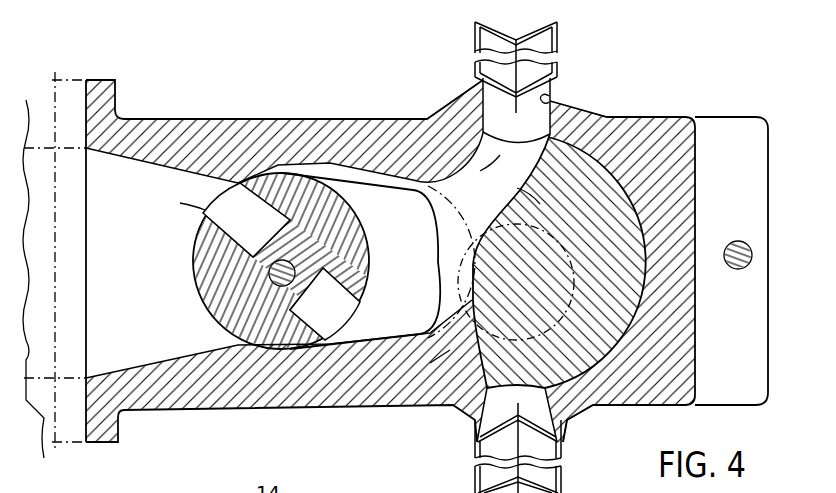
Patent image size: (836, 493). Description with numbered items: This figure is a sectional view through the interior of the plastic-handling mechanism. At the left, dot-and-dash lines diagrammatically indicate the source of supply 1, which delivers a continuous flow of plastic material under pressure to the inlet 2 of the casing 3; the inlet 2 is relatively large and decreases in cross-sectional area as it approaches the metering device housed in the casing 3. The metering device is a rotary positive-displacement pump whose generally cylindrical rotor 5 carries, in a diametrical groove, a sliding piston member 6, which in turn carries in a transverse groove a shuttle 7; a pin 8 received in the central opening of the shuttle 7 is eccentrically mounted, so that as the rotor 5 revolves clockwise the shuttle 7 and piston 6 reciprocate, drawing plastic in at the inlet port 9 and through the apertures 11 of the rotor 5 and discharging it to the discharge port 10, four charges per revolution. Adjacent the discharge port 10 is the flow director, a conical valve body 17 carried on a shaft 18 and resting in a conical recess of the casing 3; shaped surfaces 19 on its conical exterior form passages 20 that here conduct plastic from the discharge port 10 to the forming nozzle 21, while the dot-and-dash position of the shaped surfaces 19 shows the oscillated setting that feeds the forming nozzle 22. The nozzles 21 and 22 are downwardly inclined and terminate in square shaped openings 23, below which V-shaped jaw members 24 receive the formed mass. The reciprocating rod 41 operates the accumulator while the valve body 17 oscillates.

The source of supply 1 is at (54, 275).
The inlet 2 is at (87, 212).
The casing 3 is at (347, 407).
The rotor 5 is at (275, 250).
The piston member 6 is at (210, 300).
The shuttle 7 is at (274, 246).
The pin 8 is at (303, 276).
The inlet port 9 is at (184, 199).
The discharge port 10 is at (362, 208).
The apertures 11 is at (249, 212).
The conical valve body 17 is at (590, 275).
The shaft 18 is at (568, 292).
The shaped surfaces 19 is at (566, 333).
The passages 20 is at (453, 268).
The forming nozzle 21 is at (552, 100).
The forming nozzle 22 is at (543, 400).
The square shaped openings 23 is at (483, 88).
The V-shaped jaw members 24 is at (475, 33).
The reciprocating rod 41 is at (753, 258).